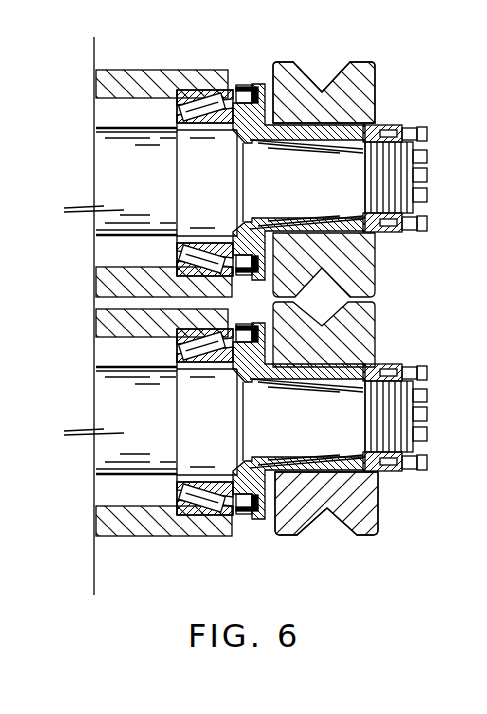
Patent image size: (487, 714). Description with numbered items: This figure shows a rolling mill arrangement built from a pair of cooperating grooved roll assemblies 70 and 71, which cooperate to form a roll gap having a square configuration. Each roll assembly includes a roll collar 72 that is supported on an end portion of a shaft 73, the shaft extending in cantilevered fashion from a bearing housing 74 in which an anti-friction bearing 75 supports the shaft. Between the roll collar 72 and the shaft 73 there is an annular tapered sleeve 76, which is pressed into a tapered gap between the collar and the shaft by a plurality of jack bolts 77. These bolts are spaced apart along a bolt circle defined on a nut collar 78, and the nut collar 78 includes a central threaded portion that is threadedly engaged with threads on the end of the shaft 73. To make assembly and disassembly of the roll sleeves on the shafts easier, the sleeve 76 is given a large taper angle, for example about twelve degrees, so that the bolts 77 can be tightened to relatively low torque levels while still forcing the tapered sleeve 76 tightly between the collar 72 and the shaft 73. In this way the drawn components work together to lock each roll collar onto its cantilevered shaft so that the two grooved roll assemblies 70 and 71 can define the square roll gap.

The grooved roll assembly 70 is at (338, 70).
The grooved roll assembly 71 is at (375, 537).
The roll collar 72 is at (377, 73).
The shaft 73 is at (330, 182).
The bearing housing 74 is at (153, 70).
The anti-friction bearing 75 is at (177, 246).
The annular tapered sleeve 76 is at (340, 124).
The jack bolts 77 is at (430, 132).
The nut collar 78 is at (393, 235).